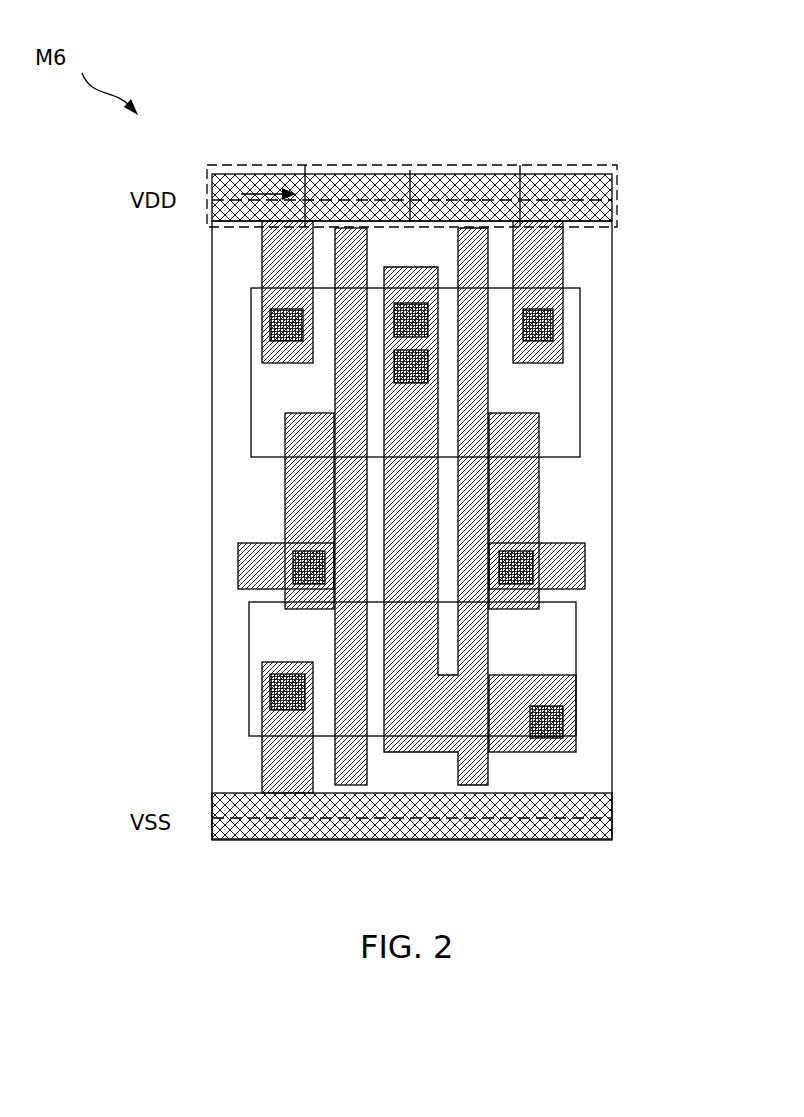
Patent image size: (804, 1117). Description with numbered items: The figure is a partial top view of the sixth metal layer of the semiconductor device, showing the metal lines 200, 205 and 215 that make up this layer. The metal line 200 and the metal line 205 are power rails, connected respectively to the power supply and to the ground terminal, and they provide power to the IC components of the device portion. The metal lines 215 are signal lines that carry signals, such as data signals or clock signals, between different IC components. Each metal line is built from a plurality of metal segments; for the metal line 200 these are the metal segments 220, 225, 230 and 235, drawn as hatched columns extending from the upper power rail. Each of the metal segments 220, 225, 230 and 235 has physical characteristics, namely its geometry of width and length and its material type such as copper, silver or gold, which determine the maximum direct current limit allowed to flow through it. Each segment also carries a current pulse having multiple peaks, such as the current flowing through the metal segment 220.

The metal line 200 is at (538, 77).
The metal line 205 is at (612, 828).
The metal lines 215 is at (540, 510).
The metal segment 220 is at (286, 165).
The metal segment 225 is at (362, 165).
The metal segment 230 is at (458, 165).
The metal segment 235 is at (538, 165).